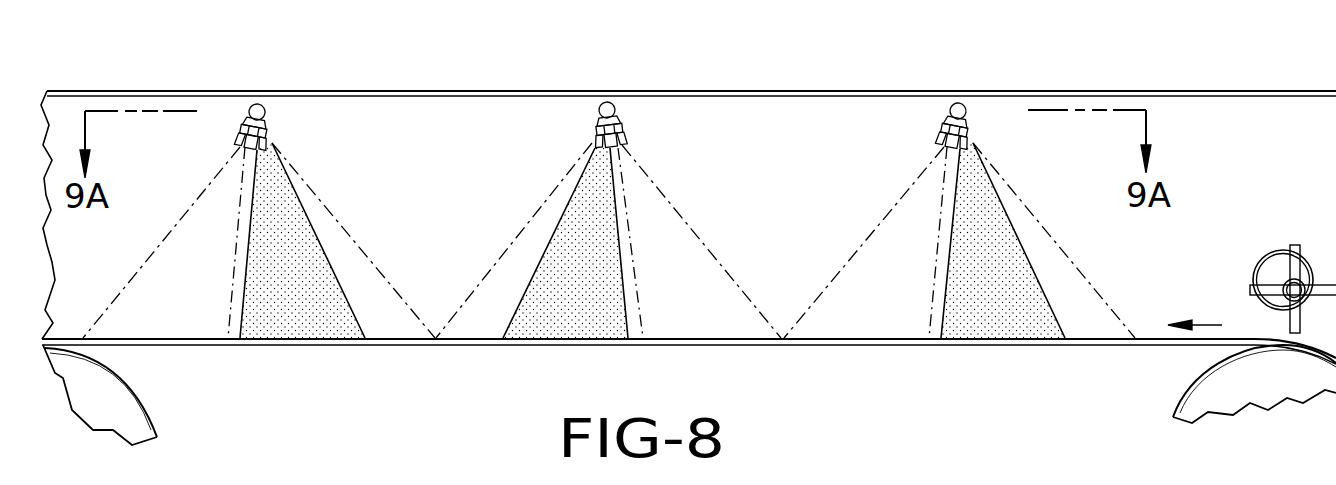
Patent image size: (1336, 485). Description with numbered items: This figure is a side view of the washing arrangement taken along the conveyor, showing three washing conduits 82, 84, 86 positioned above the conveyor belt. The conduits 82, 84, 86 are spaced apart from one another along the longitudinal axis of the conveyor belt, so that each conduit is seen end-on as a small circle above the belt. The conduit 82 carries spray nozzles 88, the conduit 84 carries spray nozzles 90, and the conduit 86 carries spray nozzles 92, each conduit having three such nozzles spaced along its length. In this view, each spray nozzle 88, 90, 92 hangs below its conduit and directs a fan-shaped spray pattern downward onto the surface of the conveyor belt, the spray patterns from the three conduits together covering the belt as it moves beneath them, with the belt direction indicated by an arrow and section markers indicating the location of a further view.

The washing conduit 82 is at (258, 110).
The washing conduit 84 is at (610, 108).
The washing conduit 86 is at (961, 108).
The spray nozzle 88 is at (273, 144).
The spray nozzle 90 is at (605, 145).
The spray nozzle 92 is at (963, 145).